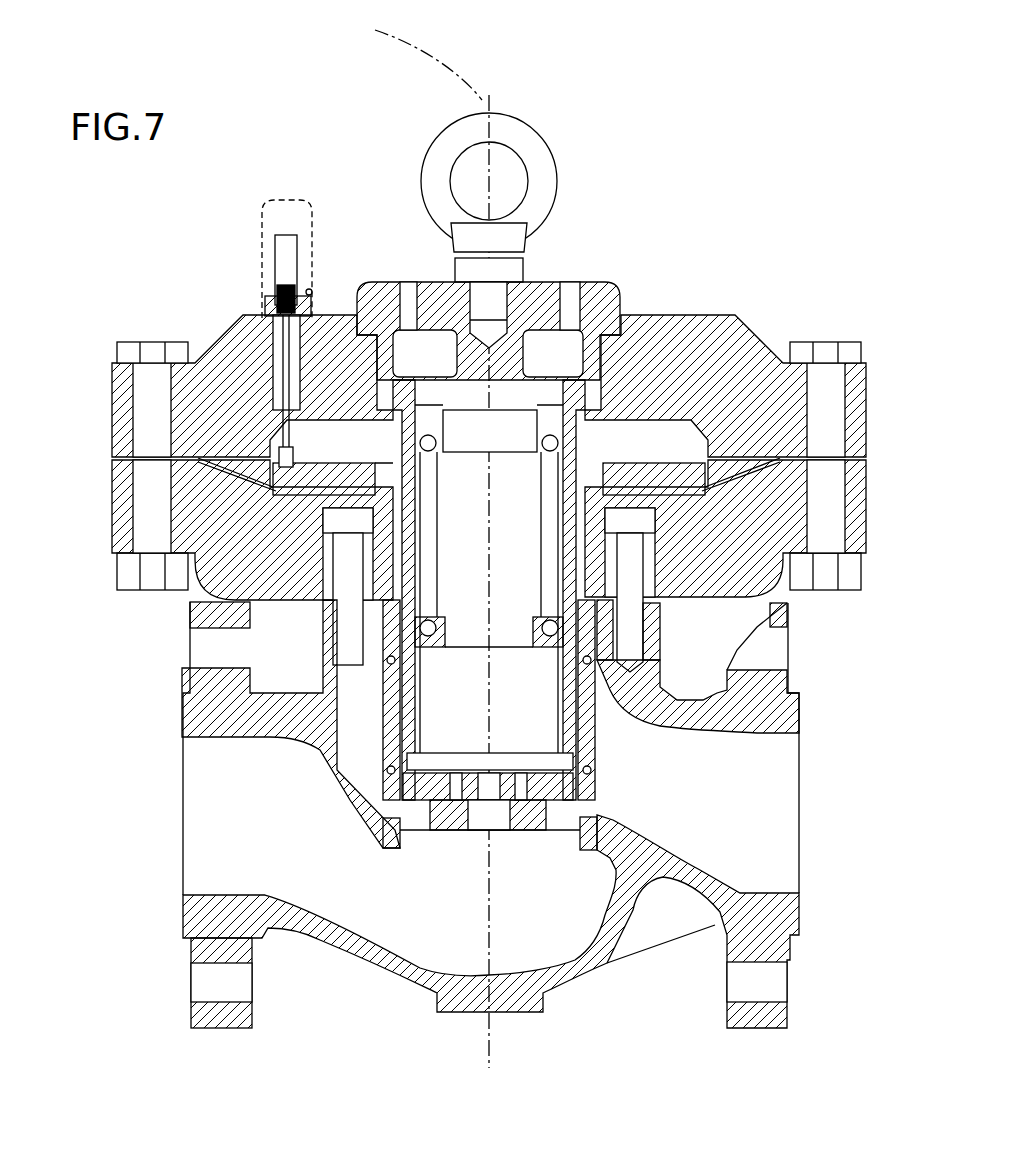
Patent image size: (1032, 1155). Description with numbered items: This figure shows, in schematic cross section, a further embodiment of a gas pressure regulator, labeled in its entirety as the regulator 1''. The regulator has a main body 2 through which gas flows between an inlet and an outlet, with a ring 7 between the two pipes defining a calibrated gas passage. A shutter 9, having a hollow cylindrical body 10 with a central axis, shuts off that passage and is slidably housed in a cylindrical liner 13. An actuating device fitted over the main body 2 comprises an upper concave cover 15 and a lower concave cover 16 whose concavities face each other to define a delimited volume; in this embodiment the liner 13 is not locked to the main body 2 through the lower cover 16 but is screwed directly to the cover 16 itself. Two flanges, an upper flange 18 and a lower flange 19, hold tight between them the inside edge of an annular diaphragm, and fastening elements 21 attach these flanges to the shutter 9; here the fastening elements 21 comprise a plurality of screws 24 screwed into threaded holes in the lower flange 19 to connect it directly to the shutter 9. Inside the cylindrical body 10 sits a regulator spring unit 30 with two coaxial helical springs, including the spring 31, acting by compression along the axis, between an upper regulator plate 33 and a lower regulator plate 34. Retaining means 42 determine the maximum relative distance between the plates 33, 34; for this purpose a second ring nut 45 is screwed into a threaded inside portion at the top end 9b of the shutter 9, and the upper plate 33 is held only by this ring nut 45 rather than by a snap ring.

The pressure regulator 1'' is at (499, 539).
The main body 2 is at (218, 713).
The ring 7 is at (437, 655).
The shutter 9 is at (516, 832).
The top end of the shutter 9b is at (610, 460).
The hollow cylindrical body 10 is at (713, 678).
The cylindrical liner 13 is at (598, 735).
The upper concave cover 15 is at (240, 357).
The lower concave cover 16 is at (233, 562).
The upper flange 18 is at (680, 457).
The lower flange 19 is at (690, 522).
The fastening elements 21 is at (370, 490).
The screws 24 is at (385, 475).
The regulator spring unit 30 is at (477, 657).
The helical spring 31 is at (428, 525).
The upper regulator plate 33 is at (538, 395).
The lower regulator plate 34 is at (393, 757).
The retaining means 42 is at (410, 357).
The second ring nut 45 is at (560, 390).